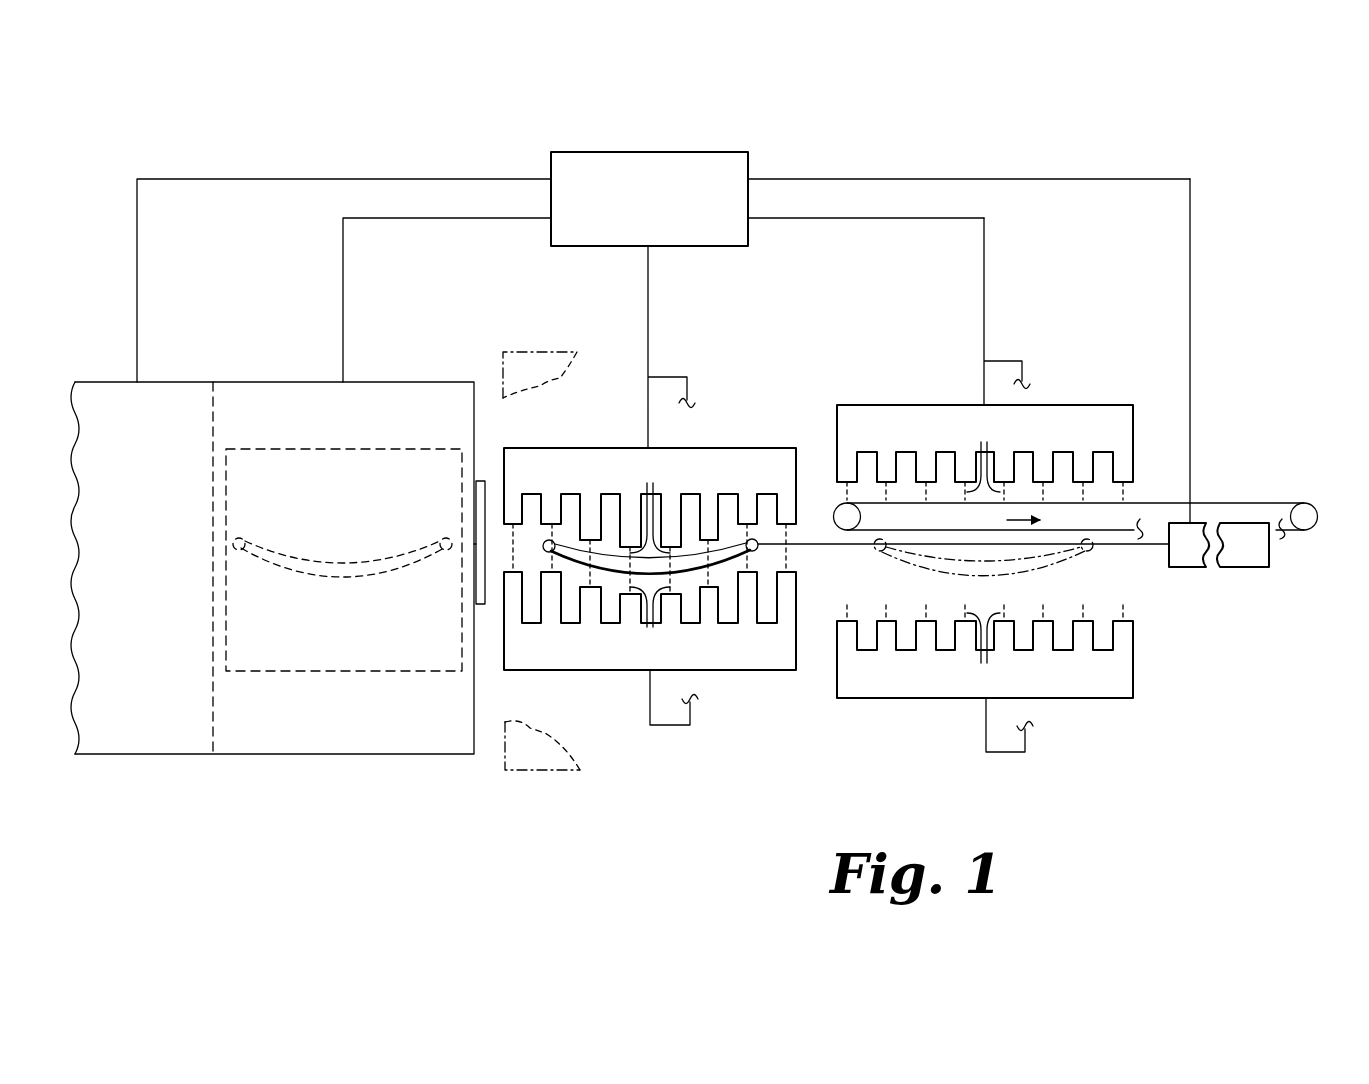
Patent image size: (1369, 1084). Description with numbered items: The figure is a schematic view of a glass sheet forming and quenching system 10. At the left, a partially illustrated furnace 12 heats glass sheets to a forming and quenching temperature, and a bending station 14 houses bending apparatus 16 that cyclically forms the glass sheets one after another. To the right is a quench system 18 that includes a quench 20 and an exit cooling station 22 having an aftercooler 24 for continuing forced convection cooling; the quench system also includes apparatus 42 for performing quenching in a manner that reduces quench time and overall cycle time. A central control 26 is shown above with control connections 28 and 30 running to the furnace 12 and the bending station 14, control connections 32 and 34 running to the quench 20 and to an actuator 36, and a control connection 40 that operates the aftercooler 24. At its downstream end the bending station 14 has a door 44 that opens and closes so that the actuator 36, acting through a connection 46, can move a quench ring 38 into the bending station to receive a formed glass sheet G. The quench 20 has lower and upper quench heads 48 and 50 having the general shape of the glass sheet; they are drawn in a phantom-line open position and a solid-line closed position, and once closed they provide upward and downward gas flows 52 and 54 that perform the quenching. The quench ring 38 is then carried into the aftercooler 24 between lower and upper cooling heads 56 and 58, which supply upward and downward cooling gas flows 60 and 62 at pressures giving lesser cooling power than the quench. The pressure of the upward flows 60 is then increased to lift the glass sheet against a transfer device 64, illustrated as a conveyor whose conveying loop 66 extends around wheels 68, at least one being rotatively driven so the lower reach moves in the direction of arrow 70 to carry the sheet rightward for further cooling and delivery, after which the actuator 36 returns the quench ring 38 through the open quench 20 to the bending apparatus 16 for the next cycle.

The glass sheet forming and quenching system 10 is at (455, 842).
The furnace 12 is at (145, 762).
The bending station 14 is at (272, 604).
The bending apparatus 16 is at (355, 676).
The quench system 18 is at (861, 755).
The quench 20 is at (744, 702).
The exit cooling station 22 is at (1064, 752).
The aftercooler 24 is at (1088, 710).
The central control 26 is at (690, 152).
The control connection 28 is at (240, 179).
The control connection 30 is at (382, 218).
The control connection 32 is at (648, 318).
The control connection 34 is at (1190, 295).
The actuator 36 is at (1194, 567).
The quench ring 38 is at (268, 565).
The control connection 40 is at (984, 270).
The quenching apparatus 42 is at (758, 338).
The door 44 is at (480, 481).
The connection 46 is at (1107, 548).
The lower quench head 48 is at (650, 671).
The upper quench head 50 is at (649, 452).
The upward gas flow 52 is at (650, 622).
The downward gas flow 54 is at (650, 505).
The lower cooling head 56 is at (1014, 682).
The upper cooling head 58 is at (1005, 437).
The upward cooling gas flow 60 is at (983, 651).
The downward cooling gas flow 62 is at (983, 454).
The transfer device 64 is at (1167, 497).
The conveying loop 66 is at (1075, 473).
The wheels 68 is at (832, 507).
The arrow 70 is at (1028, 520).
The glass sheet G is at (753, 530).